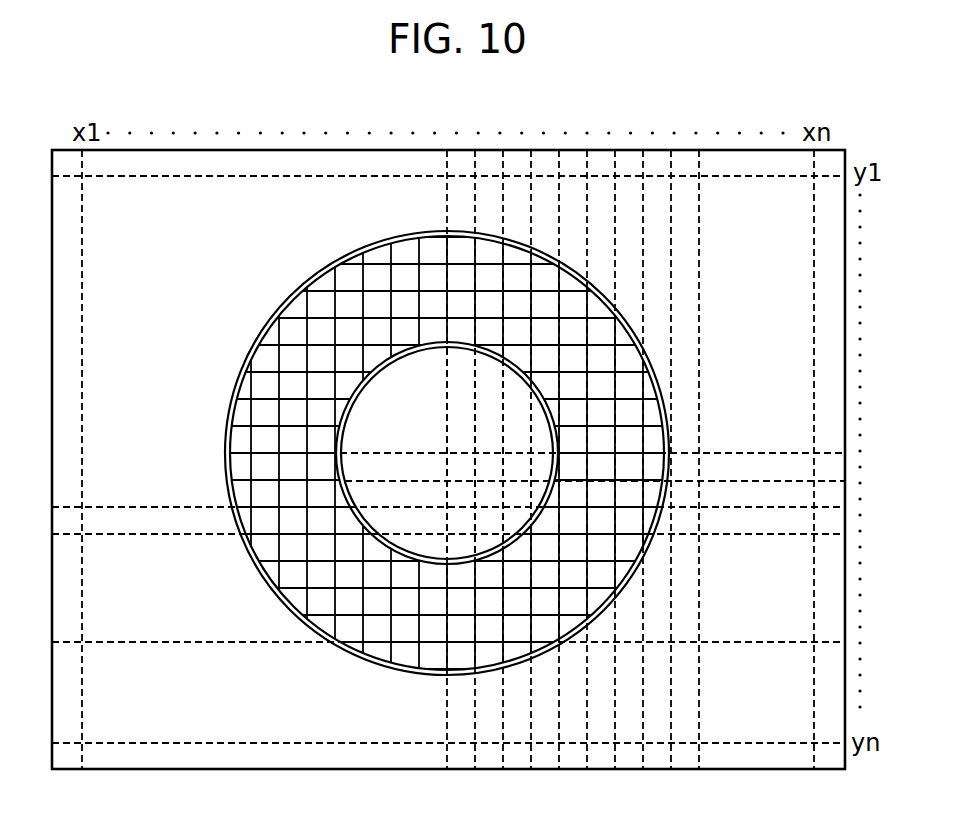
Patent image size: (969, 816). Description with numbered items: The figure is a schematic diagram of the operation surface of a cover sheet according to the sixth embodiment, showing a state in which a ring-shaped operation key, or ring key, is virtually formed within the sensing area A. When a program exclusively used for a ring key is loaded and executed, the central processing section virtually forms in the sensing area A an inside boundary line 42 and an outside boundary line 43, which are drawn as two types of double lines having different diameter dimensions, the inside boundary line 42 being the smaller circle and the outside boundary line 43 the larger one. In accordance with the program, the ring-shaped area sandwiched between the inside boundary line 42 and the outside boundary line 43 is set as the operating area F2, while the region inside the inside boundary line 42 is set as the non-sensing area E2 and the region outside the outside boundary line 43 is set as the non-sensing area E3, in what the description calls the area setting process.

The sensing area A is at (579, 140).
The non-sensing area E3 is at (221, 191).
The non-sensing area E2 is at (372, 515).
The operating area F2 is at (238, 465).
The outside boundary line 43 is at (237, 379).
The inside boundary line 42 is at (348, 405).